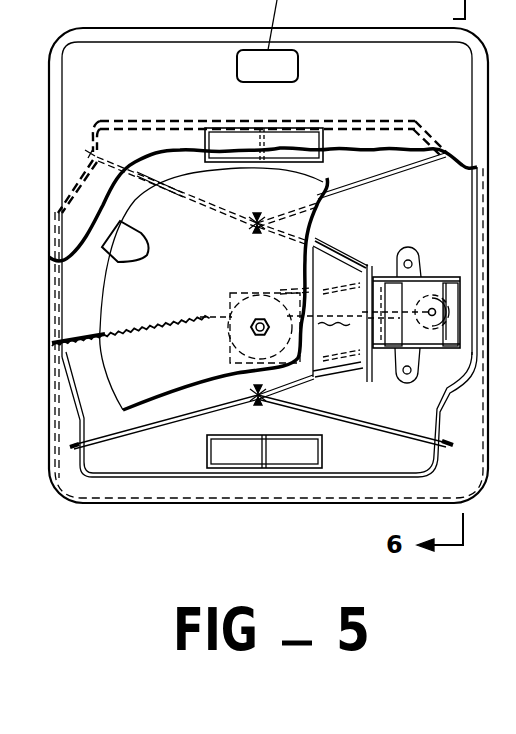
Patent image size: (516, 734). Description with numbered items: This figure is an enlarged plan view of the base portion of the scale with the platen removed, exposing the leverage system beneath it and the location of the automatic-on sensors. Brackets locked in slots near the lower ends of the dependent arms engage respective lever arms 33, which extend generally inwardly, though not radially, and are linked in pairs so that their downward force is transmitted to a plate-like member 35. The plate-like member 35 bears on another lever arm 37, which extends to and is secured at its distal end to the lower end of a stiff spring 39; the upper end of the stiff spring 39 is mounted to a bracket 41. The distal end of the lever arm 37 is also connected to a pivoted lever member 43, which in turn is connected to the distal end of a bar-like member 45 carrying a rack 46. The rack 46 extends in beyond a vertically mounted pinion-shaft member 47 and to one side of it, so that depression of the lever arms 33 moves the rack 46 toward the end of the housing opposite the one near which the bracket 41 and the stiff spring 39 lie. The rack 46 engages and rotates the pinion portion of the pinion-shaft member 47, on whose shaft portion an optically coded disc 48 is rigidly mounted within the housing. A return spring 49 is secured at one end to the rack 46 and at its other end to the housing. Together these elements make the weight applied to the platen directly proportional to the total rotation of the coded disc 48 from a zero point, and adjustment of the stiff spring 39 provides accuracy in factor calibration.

The lever arms 33 is at (151, 177).
The plate-like member 35 is at (326, 372).
The lever arm 37 is at (413, 312).
The stiff spring 39 is at (450, 315).
The bracket 41 is at (432, 282).
The pivoted lever member 43 is at (397, 383).
The bar-like member 45 is at (348, 278).
The rack 46 is at (226, 320).
The pinion-shaft member 47 is at (254, 318).
The optically coded disc 48 is at (175, 298).
The return spring 49 is at (135, 338).